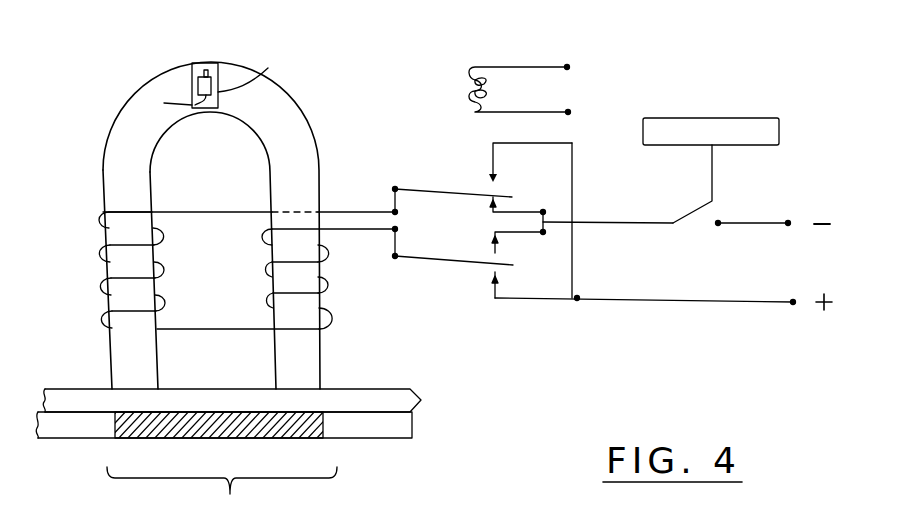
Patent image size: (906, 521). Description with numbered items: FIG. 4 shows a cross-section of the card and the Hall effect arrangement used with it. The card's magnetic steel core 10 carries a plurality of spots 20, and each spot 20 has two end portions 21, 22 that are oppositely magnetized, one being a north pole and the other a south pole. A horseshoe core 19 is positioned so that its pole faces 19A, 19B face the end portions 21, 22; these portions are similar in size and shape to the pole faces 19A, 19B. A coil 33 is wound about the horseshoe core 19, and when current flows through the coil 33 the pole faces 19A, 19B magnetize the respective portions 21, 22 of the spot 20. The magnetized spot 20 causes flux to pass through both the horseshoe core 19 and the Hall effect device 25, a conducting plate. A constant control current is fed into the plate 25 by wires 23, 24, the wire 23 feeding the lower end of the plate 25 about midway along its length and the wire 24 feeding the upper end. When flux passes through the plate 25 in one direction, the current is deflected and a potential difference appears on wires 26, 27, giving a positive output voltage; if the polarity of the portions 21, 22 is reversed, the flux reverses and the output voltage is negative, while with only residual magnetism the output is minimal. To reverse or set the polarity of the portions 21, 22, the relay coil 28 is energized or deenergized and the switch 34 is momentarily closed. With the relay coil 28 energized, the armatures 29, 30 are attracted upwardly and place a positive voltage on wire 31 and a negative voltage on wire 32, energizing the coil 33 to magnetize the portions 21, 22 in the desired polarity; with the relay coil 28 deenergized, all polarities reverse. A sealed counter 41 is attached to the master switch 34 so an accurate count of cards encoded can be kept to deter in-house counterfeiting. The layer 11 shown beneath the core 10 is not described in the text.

The core 10 is at (380, 430).
The upper plate 11 is at (388, 402).
The horseshoe core 19 is at (304, 148).
The pole face 19A is at (130, 390).
The pole face 19B is at (308, 390).
The spot 20 is at (222, 494).
The end portion 21 is at (158, 439).
The end portion 22 is at (282, 412).
The wire 23 is at (205, 110).
The wire 24 is at (192, 64).
The Hall effect device 25 is at (258, 66).
The wire 26 is at (163, 102).
The wire 27 is at (208, 68).
The relay coil 28 is at (462, 92).
The armature 29 is at (461, 192).
The armature 30 is at (462, 262).
The wire 31 is at (367, 212).
The wire 32 is at (364, 231).
The coil 33 is at (258, 269).
The switch 34 is at (700, 211).
The sealed counter 41 is at (789, 93).